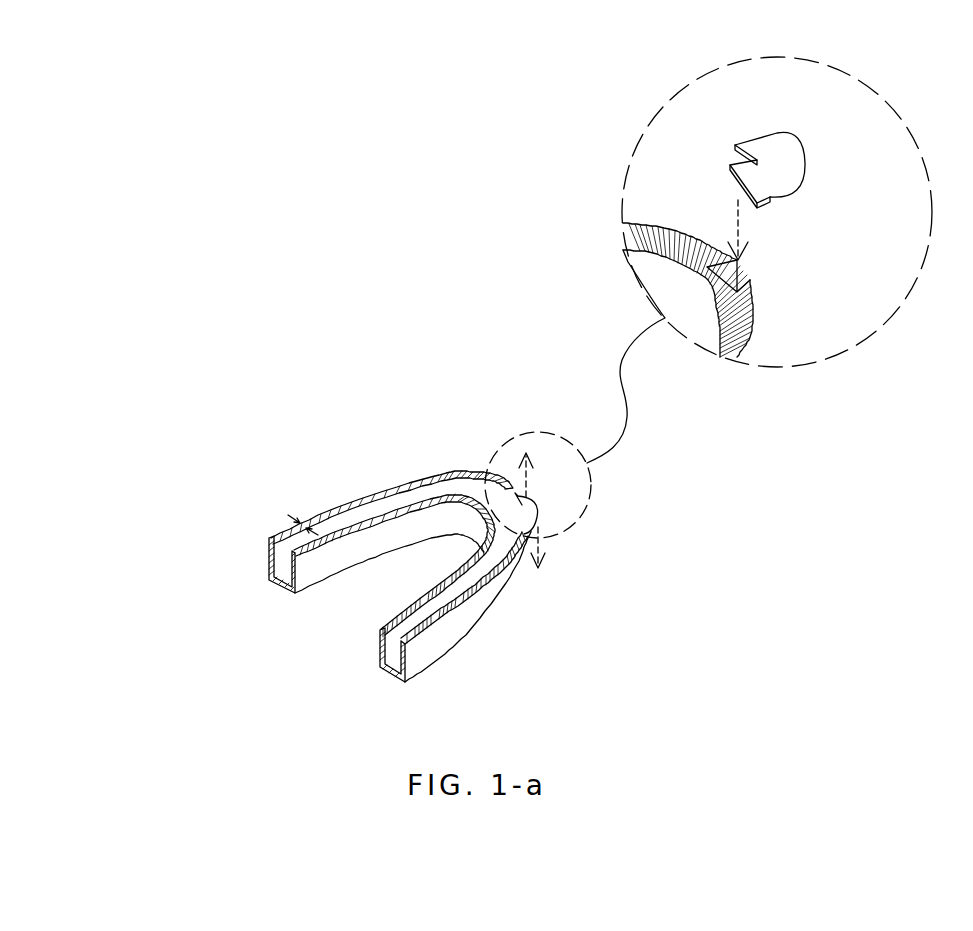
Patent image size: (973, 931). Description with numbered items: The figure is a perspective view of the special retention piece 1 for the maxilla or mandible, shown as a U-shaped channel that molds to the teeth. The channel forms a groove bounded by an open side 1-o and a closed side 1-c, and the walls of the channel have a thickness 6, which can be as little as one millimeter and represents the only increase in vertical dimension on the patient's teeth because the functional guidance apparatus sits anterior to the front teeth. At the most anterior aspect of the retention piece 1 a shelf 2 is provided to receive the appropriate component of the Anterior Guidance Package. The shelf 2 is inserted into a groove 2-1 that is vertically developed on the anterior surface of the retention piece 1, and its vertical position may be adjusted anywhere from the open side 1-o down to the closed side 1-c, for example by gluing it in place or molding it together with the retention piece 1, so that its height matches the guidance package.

The special retention piece 1 is at (345, 532).
The open side of the groove 1-o is at (290, 551).
The closed side of the groove 1-c is at (341, 658).
The thickness 6 is at (300, 524).
The shelf 2 is at (537, 510).
The groove 2-1 is at (730, 277).